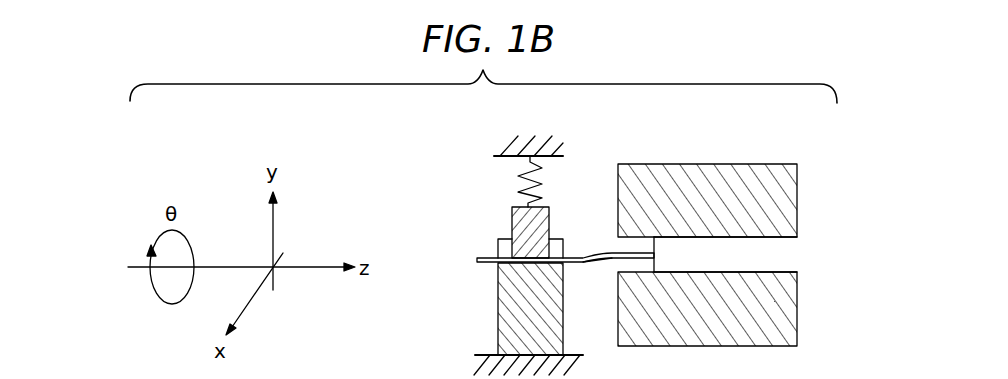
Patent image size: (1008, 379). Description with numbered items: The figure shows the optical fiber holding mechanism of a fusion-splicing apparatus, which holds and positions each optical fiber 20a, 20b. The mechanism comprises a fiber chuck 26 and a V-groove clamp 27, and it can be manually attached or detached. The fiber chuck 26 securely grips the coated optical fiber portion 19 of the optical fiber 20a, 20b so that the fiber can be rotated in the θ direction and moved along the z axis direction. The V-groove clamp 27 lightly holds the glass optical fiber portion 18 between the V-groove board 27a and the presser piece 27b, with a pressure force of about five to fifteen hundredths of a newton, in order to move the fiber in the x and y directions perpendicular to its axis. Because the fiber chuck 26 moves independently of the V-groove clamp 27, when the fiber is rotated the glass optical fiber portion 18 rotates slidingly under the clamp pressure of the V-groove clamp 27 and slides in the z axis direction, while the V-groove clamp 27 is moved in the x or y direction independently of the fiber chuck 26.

The glass optical fiber portion 18 is at (477, 262).
The coated optical fiber portion 19 is at (788, 256).
The optical fiber 20a is at (595, 308).
The optical fiber 20b is at (605, 273).
The fiber chuck 26 is at (711, 172).
The V-groove clamp 27 is at (490, 281).
The V-groove board 27a is at (510, 333).
The presser piece 27b is at (511, 224).